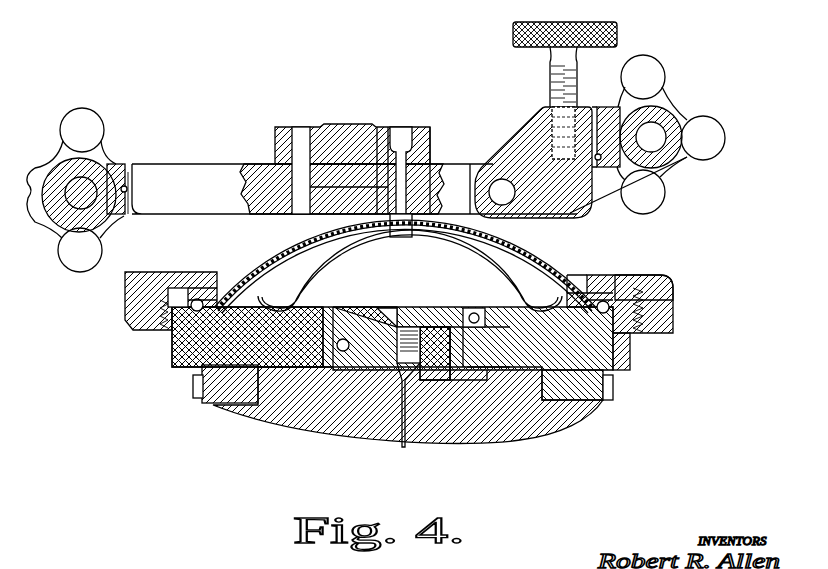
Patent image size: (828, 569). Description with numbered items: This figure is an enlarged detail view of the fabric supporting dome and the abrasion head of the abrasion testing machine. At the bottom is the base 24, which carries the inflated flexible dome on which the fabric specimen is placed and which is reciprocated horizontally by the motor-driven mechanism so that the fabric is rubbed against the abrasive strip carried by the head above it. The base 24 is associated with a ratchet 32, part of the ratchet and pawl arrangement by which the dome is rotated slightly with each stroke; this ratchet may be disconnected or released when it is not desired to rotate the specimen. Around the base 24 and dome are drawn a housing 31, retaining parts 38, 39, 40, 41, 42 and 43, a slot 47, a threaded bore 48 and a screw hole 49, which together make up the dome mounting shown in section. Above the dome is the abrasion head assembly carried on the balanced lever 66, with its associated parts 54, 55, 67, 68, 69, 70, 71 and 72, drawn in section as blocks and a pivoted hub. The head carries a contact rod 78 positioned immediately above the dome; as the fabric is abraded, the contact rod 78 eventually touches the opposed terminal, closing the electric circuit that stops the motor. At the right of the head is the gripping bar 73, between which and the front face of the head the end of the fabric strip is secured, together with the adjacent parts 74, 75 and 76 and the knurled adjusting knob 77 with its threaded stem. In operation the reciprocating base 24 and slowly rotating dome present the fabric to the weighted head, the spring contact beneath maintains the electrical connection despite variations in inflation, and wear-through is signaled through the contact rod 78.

The base 24 is at (245, 423).
The housing 31 is at (360, 317).
The ratchet 32 is at (631, 352).
The retaining ring 38 is at (610, 283).
The spring band 39 is at (542, 265).
The chain band 40 is at (512, 244).
The ring nut 41 is at (672, 306).
The plunger foot 42 is at (408, 230).
The leaf spring 43 is at (332, 243).
The slot 47 is at (405, 437).
The threaded bore 48 is at (417, 318).
The set screw hole 49 is at (476, 316).
The arm block 54 is at (246, 172).
The guide block 55 is at (345, 137).
The lever 66 is at (192, 221).
The bushing 67 is at (121, 168).
The knob hub 68 is at (88, 178).
The knob lobe 69 is at (72, 252).
The pin 70 is at (128, 190).
The clamp body 71 is at (532, 126).
The pivot hole 72 is at (498, 183).
The gripping bar 73 is at (660, 85).
The nut ring 74 is at (670, 158).
The knob lobe 75 is at (714, 146).
The pin 76 is at (601, 166).
The thumb knob 77 is at (512, 38).
The contact rod 78 is at (400, 135).